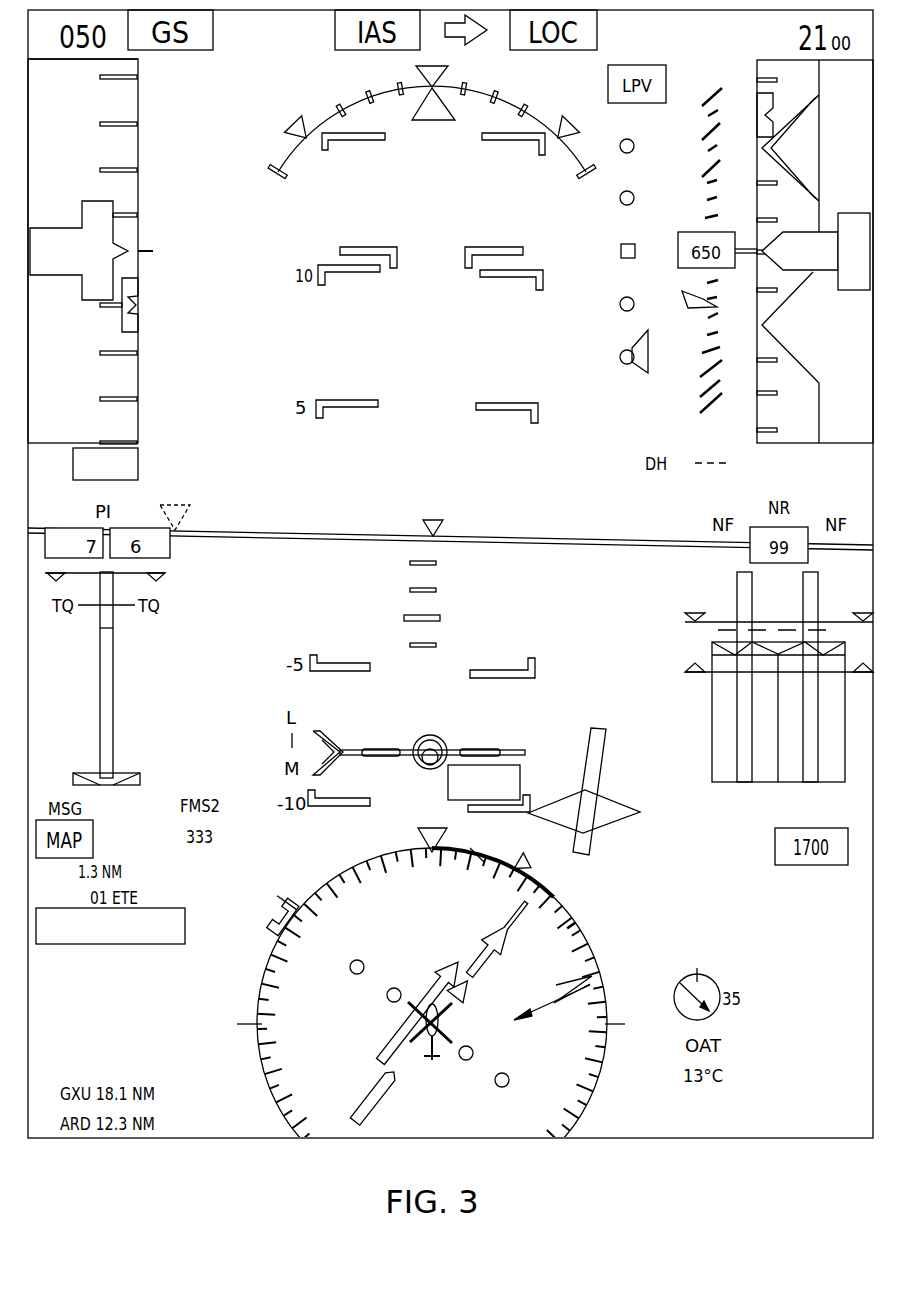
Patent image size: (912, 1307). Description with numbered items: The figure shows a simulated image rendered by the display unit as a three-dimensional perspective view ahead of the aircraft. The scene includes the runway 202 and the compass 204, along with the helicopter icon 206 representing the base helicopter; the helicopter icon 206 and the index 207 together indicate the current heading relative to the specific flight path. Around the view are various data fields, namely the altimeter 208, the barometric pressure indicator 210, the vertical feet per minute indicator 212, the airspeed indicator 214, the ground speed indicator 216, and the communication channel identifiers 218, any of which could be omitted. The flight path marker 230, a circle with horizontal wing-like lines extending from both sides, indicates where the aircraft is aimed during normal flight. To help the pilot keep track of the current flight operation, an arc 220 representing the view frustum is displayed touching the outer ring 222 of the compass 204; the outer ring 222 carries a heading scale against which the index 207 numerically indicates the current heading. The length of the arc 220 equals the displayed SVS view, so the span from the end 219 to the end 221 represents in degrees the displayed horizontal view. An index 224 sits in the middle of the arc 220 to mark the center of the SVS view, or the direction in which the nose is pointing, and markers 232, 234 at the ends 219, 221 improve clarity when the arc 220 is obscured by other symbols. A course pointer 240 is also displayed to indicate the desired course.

The runway 202 is at (604, 727).
The compass 204 is at (556, 985).
The helicopter icon 206 is at (432, 1063).
The index 207 is at (418, 834).
The altimeter 208 is at (757, 69).
The barometric pressure indicator 210 is at (758, 462).
The vertical feet per minute indicator 212 is at (706, 200).
The airspeed indicator 214 is at (138, 105).
The ground speed indicator 216 is at (138, 470).
The communication channel identifiers 218 is at (123, 945).
The end 219 is at (490, 862).
The arc 220 is at (498, 860).
The end 221 is at (556, 893).
The outer ring 222 is at (590, 948).
The index 224 is at (548, 810).
The flight path marker 230 is at (466, 748).
The marker 232 is at (478, 858).
The marker 234 is at (560, 897).
The course pointer 240 is at (480, 947).